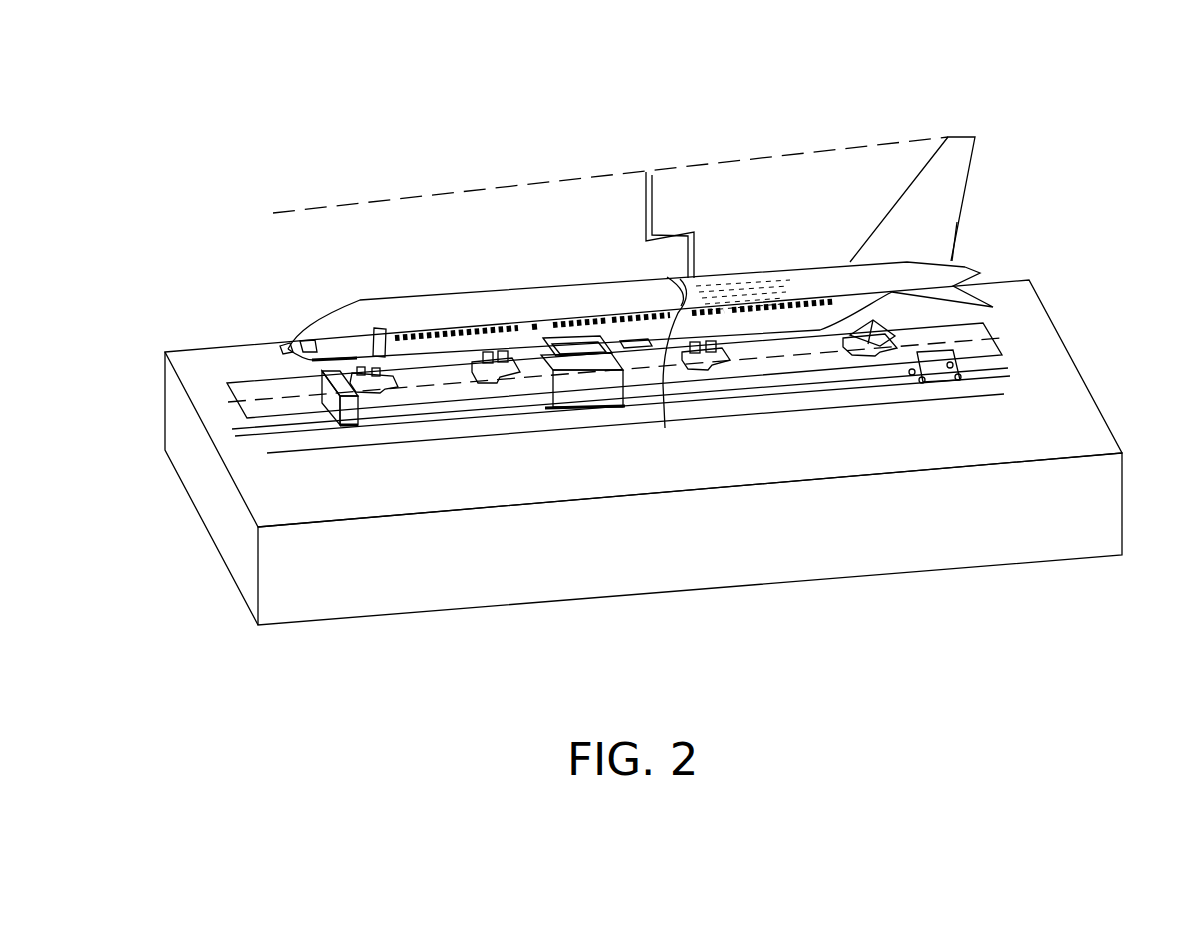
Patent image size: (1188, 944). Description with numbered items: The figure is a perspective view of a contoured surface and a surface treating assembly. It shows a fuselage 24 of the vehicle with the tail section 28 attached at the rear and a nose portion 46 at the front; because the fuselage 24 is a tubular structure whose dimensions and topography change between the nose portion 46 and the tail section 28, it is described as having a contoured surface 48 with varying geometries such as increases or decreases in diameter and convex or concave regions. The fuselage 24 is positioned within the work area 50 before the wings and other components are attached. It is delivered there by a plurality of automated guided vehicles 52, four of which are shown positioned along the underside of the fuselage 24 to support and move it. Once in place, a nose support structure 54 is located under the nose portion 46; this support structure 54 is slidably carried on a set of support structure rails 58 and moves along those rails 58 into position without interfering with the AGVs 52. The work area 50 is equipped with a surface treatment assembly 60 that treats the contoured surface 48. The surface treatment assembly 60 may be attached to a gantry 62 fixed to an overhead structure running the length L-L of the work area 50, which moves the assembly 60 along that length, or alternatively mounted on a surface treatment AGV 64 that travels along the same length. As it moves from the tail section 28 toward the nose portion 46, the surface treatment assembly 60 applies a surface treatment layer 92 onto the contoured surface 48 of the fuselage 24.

The fuselage 24 is at (542, 302).
The tail section 28 is at (1004, 152).
The nose portion 46 is at (298, 342).
The contoured surface 48 is at (414, 280).
The work area 50 is at (1062, 386).
The automated guided vehicles 52 is at (373, 390).
The nose support structure 54 is at (352, 428).
The support structure rails 58 is at (273, 433).
The surface treatment assembly 60 is at (672, 370).
The gantry 62 is at (648, 186).
The surface treatment AGV 64 is at (937, 356).
The surface treatment layer 92 is at (758, 276).